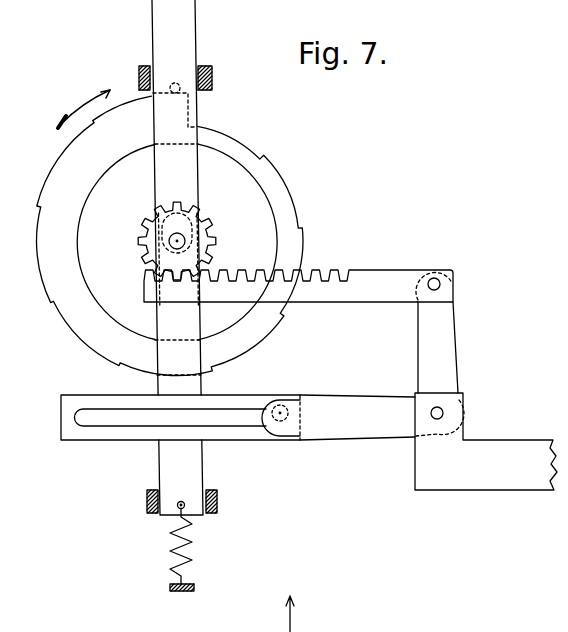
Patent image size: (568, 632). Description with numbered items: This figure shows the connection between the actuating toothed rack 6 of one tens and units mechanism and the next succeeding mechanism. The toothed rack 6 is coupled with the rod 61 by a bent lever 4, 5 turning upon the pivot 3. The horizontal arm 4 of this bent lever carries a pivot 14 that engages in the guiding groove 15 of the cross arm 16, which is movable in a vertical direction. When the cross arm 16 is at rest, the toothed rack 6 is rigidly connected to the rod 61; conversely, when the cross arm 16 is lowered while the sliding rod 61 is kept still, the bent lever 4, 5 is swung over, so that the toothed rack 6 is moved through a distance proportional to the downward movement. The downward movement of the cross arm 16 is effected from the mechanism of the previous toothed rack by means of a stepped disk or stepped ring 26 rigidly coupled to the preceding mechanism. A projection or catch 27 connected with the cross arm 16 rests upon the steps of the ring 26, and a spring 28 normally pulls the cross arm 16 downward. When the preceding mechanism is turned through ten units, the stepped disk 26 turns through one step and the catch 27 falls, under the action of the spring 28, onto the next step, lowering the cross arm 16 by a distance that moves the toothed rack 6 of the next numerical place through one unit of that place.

The pivot 3 is at (443, 412).
The horizontal arm 4 is at (362, 420).
The bent lever arm 5 is at (440, 343).
The toothed rack 6 is at (356, 288).
The rod 61 is at (509, 463).
The pivot 14 is at (280, 415).
The guiding groove 15 is at (117, 411).
The cross arm 16 is at (69, 422).
The stepped disk or stepped ring 26 is at (76, 178).
The projection or catch 27 is at (180, 84).
The spring 28 is at (194, 546).